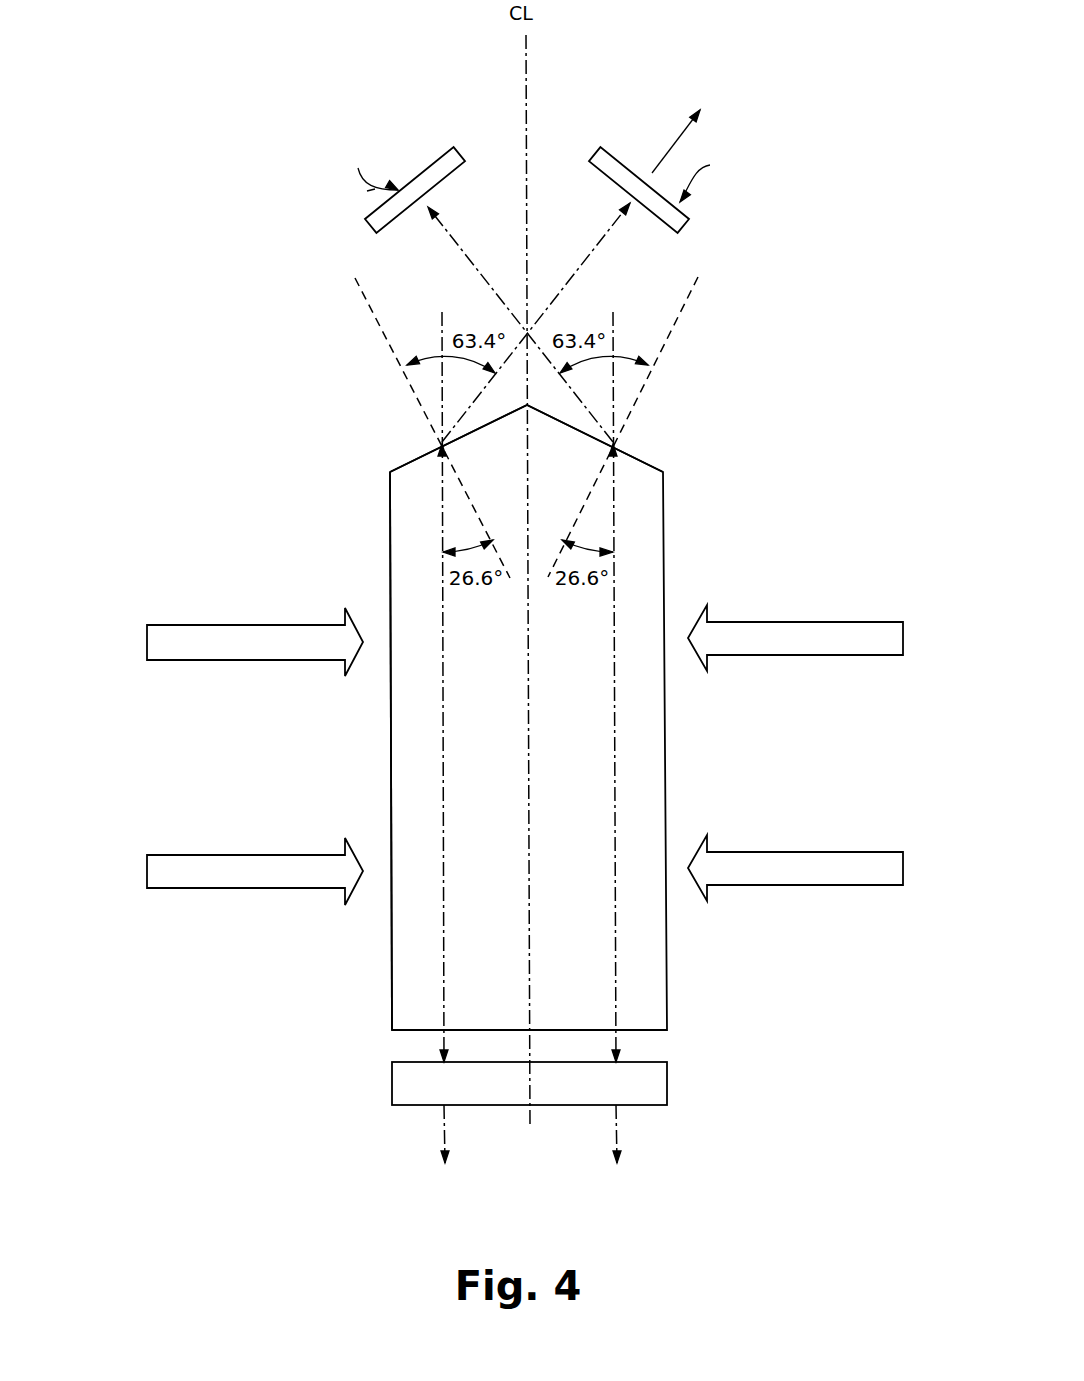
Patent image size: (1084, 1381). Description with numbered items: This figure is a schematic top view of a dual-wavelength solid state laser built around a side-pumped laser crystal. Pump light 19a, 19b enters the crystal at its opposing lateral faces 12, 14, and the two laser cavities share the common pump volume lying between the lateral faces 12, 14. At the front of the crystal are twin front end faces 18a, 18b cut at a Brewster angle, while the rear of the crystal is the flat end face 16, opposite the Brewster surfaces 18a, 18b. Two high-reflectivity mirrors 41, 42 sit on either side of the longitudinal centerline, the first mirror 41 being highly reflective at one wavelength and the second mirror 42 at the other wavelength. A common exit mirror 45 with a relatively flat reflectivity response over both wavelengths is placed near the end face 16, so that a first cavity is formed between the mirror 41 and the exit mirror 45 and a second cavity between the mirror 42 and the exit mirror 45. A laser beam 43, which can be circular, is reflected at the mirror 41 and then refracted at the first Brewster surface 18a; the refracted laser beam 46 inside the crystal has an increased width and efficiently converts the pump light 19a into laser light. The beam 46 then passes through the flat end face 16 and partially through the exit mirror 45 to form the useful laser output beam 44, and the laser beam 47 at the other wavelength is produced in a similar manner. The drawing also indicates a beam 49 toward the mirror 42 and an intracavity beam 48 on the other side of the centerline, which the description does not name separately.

The lateral face 12 is at (665, 793).
The lateral face 14 is at (392, 787).
The rear end face 16 is at (640, 1030).
The front end face 18a is at (638, 455).
The front end face 18b is at (403, 460).
The pump light 19a is at (903, 640).
The pump light 19b is at (143, 643).
The high-reflectivity mirror 41 is at (467, 158).
The high-reflectivity mirror 42 is at (598, 157).
The laser beam 43 is at (460, 243).
The laser output beam 44 is at (613, 1123).
The exit mirror 45 is at (650, 1105).
The refracted laser beam 46 is at (613, 588).
The laser beam 47 is at (442, 1123).
The 1.34 micron intracavity beam 48 is at (443, 588).
The 1.064 micron beam 49 is at (573, 277).